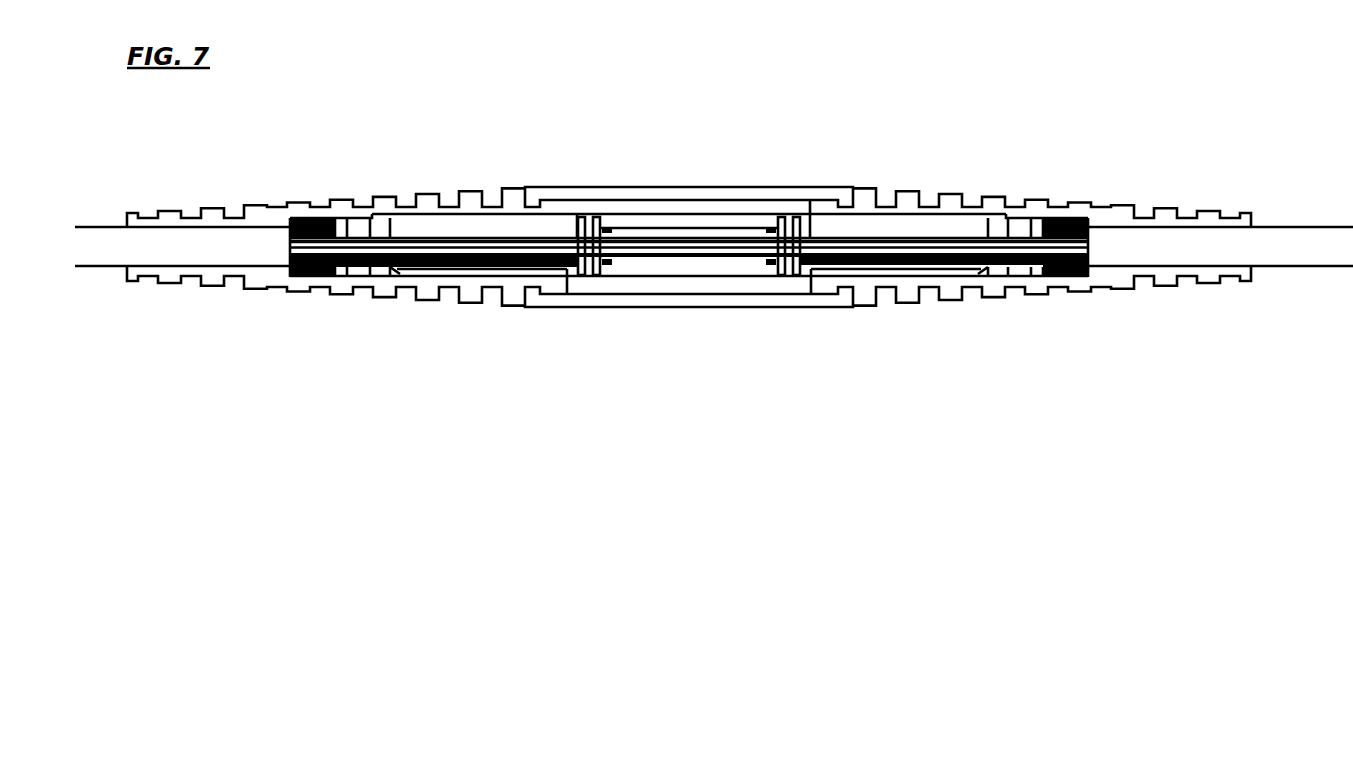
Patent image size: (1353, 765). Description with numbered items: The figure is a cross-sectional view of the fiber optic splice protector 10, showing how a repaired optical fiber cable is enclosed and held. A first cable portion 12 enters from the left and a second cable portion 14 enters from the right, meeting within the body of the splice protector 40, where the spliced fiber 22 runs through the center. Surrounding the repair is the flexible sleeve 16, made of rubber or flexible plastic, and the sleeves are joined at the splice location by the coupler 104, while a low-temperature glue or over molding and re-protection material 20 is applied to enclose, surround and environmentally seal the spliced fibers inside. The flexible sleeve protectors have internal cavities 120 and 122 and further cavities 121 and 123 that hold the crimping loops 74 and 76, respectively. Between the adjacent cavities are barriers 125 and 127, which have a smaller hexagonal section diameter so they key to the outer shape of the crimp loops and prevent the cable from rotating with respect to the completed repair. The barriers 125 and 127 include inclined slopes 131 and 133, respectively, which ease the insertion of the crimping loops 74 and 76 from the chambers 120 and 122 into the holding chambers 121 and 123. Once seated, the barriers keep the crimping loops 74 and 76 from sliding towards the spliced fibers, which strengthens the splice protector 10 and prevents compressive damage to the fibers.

The splice protector 10 is at (452, 362).
The first pipe 12 is at (114, 245).
The second pipe 14 is at (1205, 243).
The first flexible sleeve 16 is at (408, 158).
The over molding and re-protection material 20 is at (705, 193).
The inner tube 22 is at (650, 238).
The body of the splice protector 40 is at (775, 208).
The crimping loop 74 is at (310, 218).
The crimping loop 76 is at (1065, 217).
The coupler 104 is at (722, 292).
The internal cavity 120 is at (540, 230).
The cavity for crimping loop 121 is at (273, 220).
The internal cavity 122 is at (903, 230).
The cavity for crimping loop 123 is at (1093, 215).
The barrier 125 is at (375, 225).
The barrier 127 is at (995, 223).
The inclined slope 131 is at (397, 223).
The inclined slope 133 is at (982, 225).